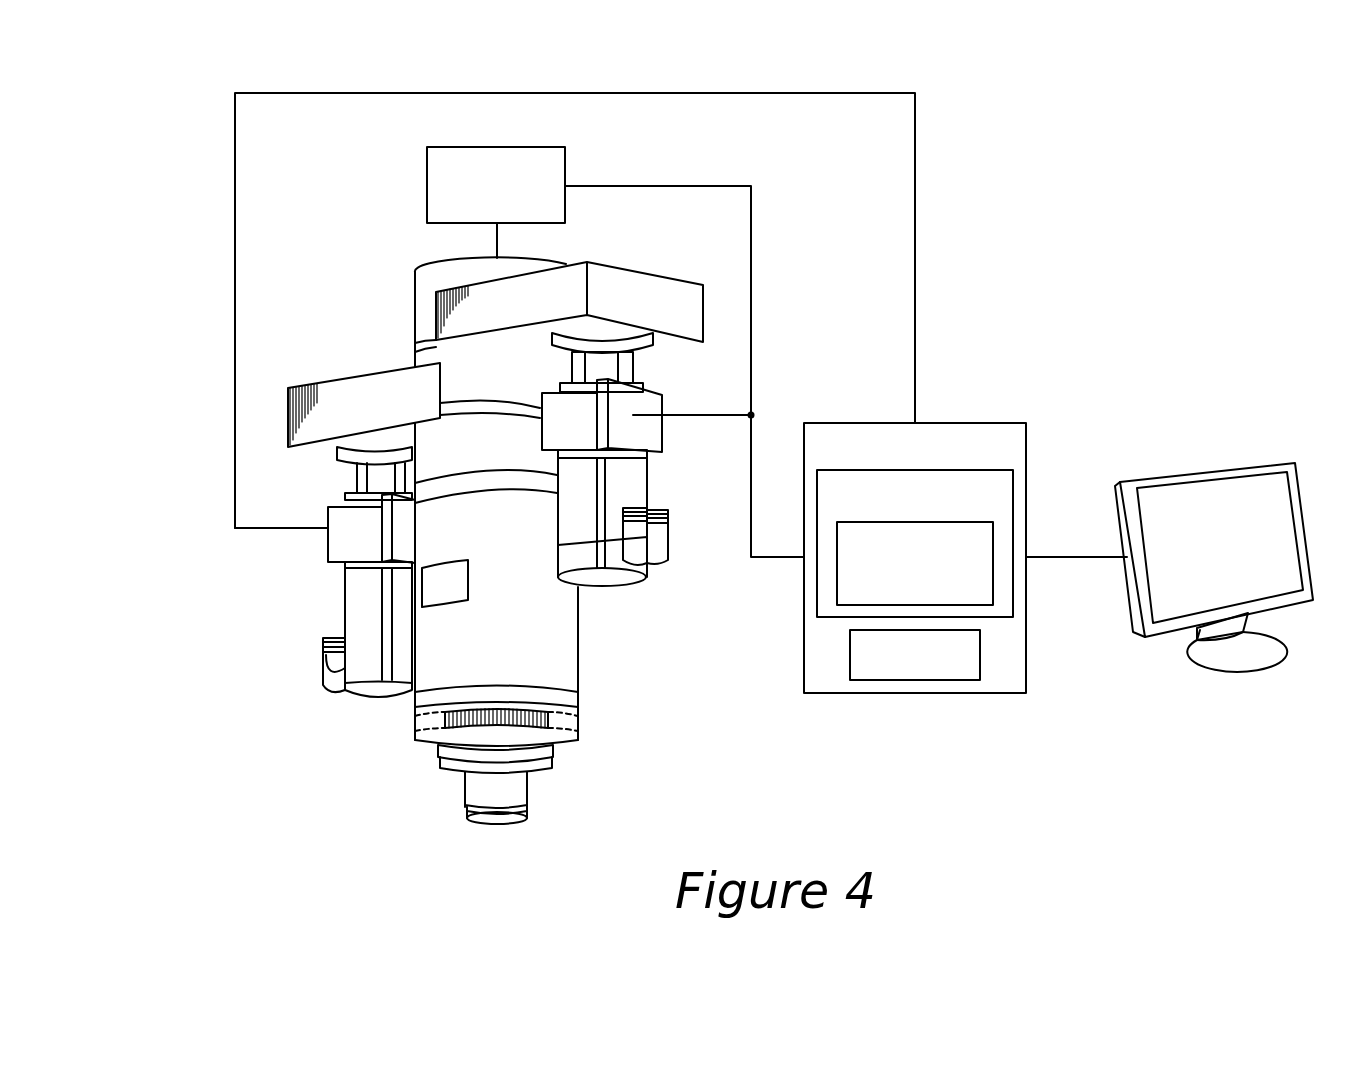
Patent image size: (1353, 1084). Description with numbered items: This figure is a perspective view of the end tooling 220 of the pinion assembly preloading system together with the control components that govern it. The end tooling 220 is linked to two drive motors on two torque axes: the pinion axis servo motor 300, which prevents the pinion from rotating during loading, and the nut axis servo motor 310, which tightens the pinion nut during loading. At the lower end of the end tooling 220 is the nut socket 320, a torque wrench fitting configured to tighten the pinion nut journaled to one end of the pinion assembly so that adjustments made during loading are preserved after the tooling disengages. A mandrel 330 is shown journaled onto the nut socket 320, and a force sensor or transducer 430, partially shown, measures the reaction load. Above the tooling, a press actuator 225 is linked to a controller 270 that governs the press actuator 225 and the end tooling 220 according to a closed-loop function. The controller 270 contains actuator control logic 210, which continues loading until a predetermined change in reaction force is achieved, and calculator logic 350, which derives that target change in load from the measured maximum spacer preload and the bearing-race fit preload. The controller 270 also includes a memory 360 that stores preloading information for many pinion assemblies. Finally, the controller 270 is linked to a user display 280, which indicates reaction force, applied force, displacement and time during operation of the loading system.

The end tooling 220 is at (212, 479).
The press actuator 225 is at (427, 185).
The pinion axis servo motor 300 is at (630, 483).
The nut axis servo motor 310 is at (358, 604).
The nut socket 320 is at (520, 830).
The mandrel 330 is at (553, 758).
The force sensor 430 is at (415, 728).
The controller 270 is at (857, 422).
The control logic 210 is at (1013, 487).
The calculator logic 350 is at (993, 587).
The memory 360 is at (850, 660).
The user display 280 is at (1200, 555).